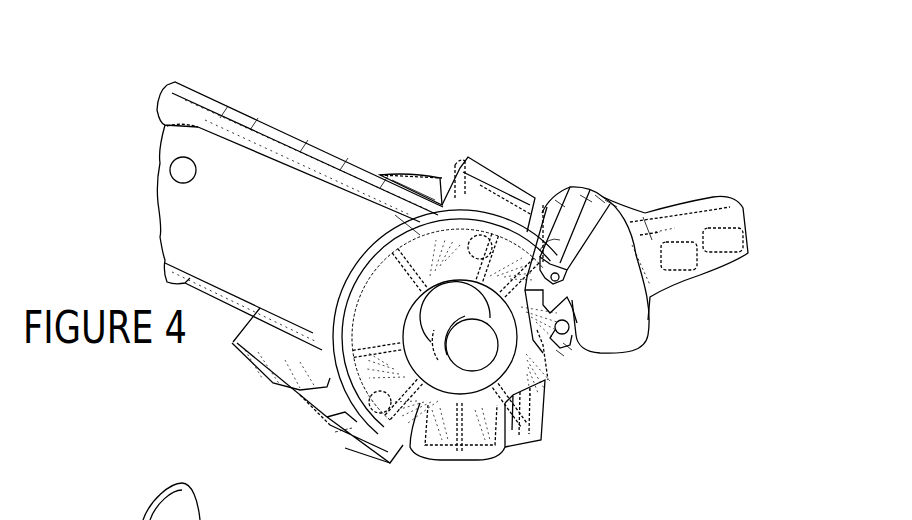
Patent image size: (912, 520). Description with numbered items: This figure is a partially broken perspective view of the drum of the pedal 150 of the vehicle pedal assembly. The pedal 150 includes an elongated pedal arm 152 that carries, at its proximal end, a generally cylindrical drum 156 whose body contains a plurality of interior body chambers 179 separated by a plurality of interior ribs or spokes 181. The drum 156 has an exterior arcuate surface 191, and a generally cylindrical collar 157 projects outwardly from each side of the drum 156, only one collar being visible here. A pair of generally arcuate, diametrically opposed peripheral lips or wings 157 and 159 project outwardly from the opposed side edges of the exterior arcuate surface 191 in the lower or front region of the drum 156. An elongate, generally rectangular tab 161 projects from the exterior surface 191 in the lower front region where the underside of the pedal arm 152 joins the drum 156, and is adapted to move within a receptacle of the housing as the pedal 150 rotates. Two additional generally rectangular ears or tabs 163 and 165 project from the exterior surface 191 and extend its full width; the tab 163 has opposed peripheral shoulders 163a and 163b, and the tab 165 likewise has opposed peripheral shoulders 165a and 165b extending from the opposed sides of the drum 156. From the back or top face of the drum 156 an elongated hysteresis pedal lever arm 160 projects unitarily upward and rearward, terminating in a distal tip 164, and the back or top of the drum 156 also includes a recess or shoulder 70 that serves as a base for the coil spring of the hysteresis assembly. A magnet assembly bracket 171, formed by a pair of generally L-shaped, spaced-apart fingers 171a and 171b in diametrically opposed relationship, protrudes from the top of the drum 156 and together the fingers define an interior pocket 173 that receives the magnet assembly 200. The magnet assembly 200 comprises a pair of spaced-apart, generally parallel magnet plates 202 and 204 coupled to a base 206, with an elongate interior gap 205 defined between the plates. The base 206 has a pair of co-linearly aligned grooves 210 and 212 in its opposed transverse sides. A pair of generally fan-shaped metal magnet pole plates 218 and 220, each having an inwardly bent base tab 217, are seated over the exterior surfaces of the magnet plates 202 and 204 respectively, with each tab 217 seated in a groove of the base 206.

The pedal 150 is at (152, 161).
The pedal arm 152 is at (238, 163).
The drum 156 is at (486, 466).
The collar 157 is at (407, 180).
The lip or wing or shoulder 159 is at (405, 232).
The hysteresis pedal lever arm 160 is at (642, 217).
The tab 161 is at (380, 364).
The tab 163 is at (357, 440).
The peripheral shoulder 163a is at (327, 427).
The peripheral shoulder 163b is at (400, 450).
The distal tip 164 is at (732, 223).
The tab 165 is at (482, 185).
The peripheral shoulder 165a is at (457, 168).
The peripheral shoulder 165b is at (527, 218).
The magnet assembly bracket 171 is at (573, 362).
The finger 171a is at (563, 343).
The finger 171b is at (545, 213).
The pocket 173 is at (537, 330).
The interior body chambers 179 is at (403, 343).
The interior ribs or spokes 181 is at (372, 368).
The exterior arcuate surface 191 is at (460, 198).
The magnet assembly 200 is at (572, 176).
The magnet plate 202 is at (202, 501).
The magnet plate 204 is at (612, 197).
The interior gap 205 is at (600, 197).
The base 206 is at (587, 195).
The groove 210 is at (562, 317).
The groove 212 is at (555, 290).
The base tab 217 is at (560, 353).
The magnet pole plate 218 is at (563, 197).
The magnet pole plate 220 is at (648, 322).
The shoulder 70 is at (503, 423).